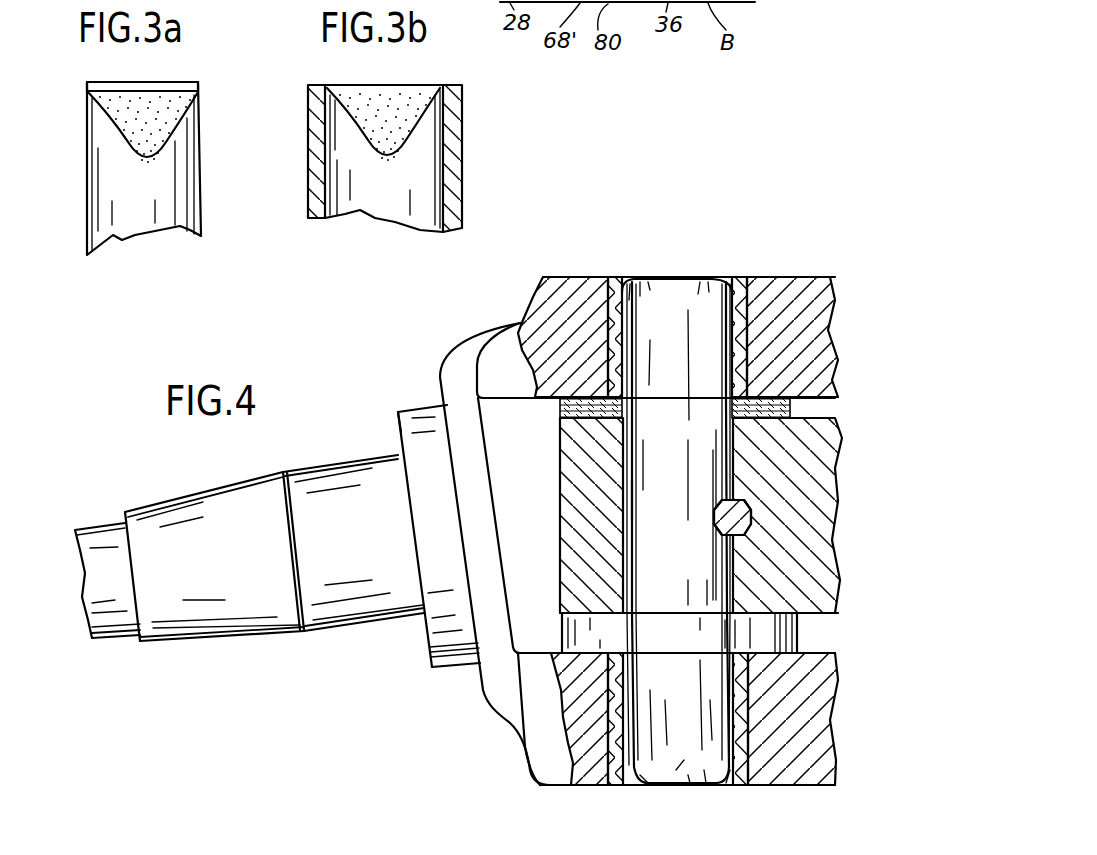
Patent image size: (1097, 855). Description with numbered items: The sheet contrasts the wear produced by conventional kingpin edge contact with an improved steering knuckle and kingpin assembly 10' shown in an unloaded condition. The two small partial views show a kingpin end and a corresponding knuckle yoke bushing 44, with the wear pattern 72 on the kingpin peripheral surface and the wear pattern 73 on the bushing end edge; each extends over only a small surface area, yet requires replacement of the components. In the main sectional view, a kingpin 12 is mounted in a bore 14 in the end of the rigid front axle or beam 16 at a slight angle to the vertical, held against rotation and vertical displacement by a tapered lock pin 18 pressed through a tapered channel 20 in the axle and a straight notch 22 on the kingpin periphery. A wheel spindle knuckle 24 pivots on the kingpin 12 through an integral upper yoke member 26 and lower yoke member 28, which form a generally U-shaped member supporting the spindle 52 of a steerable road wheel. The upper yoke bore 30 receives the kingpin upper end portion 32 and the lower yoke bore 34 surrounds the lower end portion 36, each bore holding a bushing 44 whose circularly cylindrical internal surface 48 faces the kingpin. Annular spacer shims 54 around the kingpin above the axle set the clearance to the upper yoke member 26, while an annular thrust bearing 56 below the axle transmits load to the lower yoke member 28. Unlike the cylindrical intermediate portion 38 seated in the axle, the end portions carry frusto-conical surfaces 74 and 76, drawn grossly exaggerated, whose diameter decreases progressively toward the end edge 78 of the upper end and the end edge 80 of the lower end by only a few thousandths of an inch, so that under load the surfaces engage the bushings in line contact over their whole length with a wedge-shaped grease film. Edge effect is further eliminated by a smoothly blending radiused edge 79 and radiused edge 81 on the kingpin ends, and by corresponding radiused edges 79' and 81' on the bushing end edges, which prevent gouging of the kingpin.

In FIG. 4, the steering knuckle and kingpin assembly 10' is at (359, 398).
In FIG. 3A, the kingpin 12 is at (78, 189).
In FIG. 4, the kingpin 12 is at (677, 524).
In FIG. 4, the bore 14 is at (632, 567).
In FIG. 4, the front axle or beam 16 is at (832, 556).
In FIG. 4, the tapered lock pin 18 is at (727, 548).
In FIG. 4, the tapered channel 20 is at (754, 521).
In FIG. 4, the straight notch 22 is at (716, 528).
In FIG. 4, the wheel spindle knuckle 24 is at (480, 333).
In FIG. 4, the upper yoke member 26 is at (530, 320).
In FIG. 4, the lower yoke member 28 is at (565, 780).
In FIG. 4, the upper yoke bore 30 is at (612, 342).
In FIG. 4, the upper end portion 32 is at (699, 278).
In FIG. 4, the lower yoke bore 34 is at (614, 710).
In FIG. 4, the lower end portion 36 is at (705, 775).
In FIG. 4, the intermediate portion 38 is at (631, 494).
In FIG. 3B, the bushing 44 is at (463, 173).
In FIG. 4, the bushing 44 is at (758, 353).
In FIG. 4, the internal surface 48 is at (625, 315).
In FIG. 4, the spindle 52 is at (368, 617).
In FIG. 4, the annular spacer shims 54 is at (793, 412).
In FIG. 4, the annular thrust bearing 56 is at (798, 633).
In FIG. 3A, the wear pattern 72 is at (160, 98).
In FIG. 3B, the wear pattern 73 is at (388, 92).
In FIG. 4, the frusto-conical surface 74 is at (653, 290).
In FIG. 4, the frusto-conical surface 76 is at (683, 757).
In FIG. 4, the end edge 78 is at (692, 290).
In FIG. 4, the radiused edge 79 is at (653, 264).
In FIG. 4, the radiused edge 79' is at (605, 265).
In FIG. 4, the end edge 80 is at (650, 787).
In FIG. 4, the radiused edge 81 is at (687, 806).
In FIG. 4, the radiused edge 81' is at (755, 799).